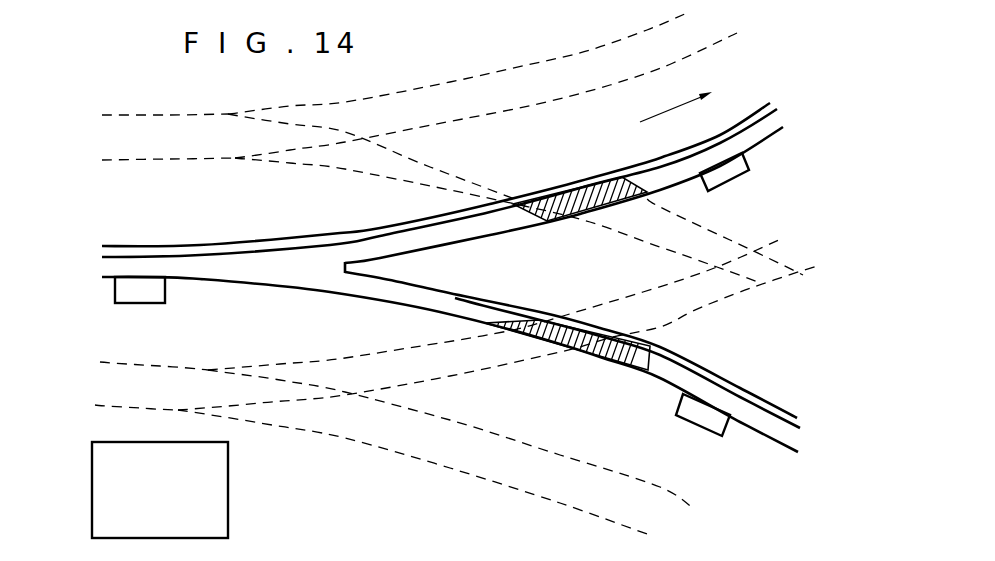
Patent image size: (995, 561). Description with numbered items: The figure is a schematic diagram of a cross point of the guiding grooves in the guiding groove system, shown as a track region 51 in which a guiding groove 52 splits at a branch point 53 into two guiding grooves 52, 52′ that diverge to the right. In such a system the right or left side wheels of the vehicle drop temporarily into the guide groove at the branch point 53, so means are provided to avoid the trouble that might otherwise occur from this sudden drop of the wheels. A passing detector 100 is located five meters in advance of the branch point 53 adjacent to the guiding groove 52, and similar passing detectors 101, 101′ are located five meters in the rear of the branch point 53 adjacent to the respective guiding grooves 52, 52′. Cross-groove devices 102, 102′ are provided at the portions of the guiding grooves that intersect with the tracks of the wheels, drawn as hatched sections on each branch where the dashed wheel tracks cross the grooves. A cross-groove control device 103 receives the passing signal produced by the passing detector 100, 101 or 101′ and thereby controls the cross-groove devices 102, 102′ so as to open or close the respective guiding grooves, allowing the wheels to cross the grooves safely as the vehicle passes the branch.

The track 51 is at (127, 198).
The guiding groove 52 is at (250, 262).
The second branch rail 52′ is at (678, 368).
The branch point 53 is at (343, 268).
The passing detector 100 is at (165, 301).
The passing detector 101 is at (747, 166).
The passing detector 101′ is at (687, 427).
The cross-groove device 102 is at (598, 182).
The cross-groove device 102′ is at (607, 362).
The cross-groove control device 103 is at (228, 482).